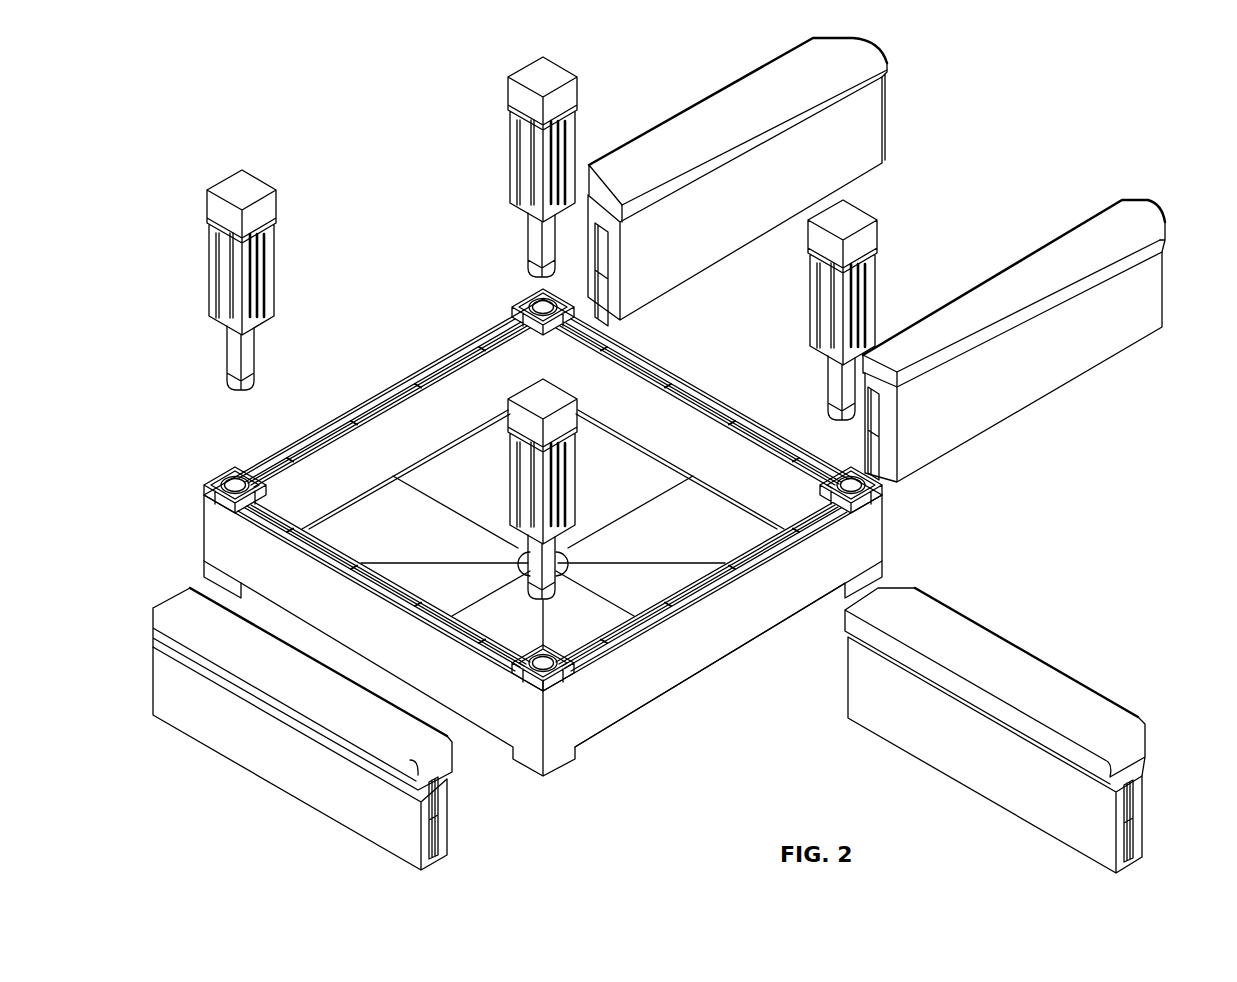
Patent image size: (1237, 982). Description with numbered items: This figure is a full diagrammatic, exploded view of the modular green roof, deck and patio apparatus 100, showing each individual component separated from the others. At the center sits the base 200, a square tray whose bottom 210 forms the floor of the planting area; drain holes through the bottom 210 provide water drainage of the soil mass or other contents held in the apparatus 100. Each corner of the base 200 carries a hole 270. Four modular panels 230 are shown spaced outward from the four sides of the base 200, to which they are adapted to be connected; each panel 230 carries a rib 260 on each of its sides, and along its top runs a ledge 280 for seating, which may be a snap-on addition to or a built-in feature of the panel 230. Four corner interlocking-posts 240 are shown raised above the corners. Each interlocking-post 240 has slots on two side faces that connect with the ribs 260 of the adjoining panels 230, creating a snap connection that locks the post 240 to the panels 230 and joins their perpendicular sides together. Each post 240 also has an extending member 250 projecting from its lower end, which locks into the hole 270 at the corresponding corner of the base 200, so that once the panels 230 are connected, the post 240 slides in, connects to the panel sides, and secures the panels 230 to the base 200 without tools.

The green roof, deck and patio apparatus 100 is at (266, 82).
The base 200 is at (571, 532).
The bottom of the base 210 is at (527, 632).
The modular panel 230 is at (1026, 730).
The corner interlocking-post 240 is at (838, 299).
The extending member 250 is at (832, 397).
The rib 260 is at (1133, 842).
The hole 270 is at (850, 490).
The ledge 280 is at (1102, 710).